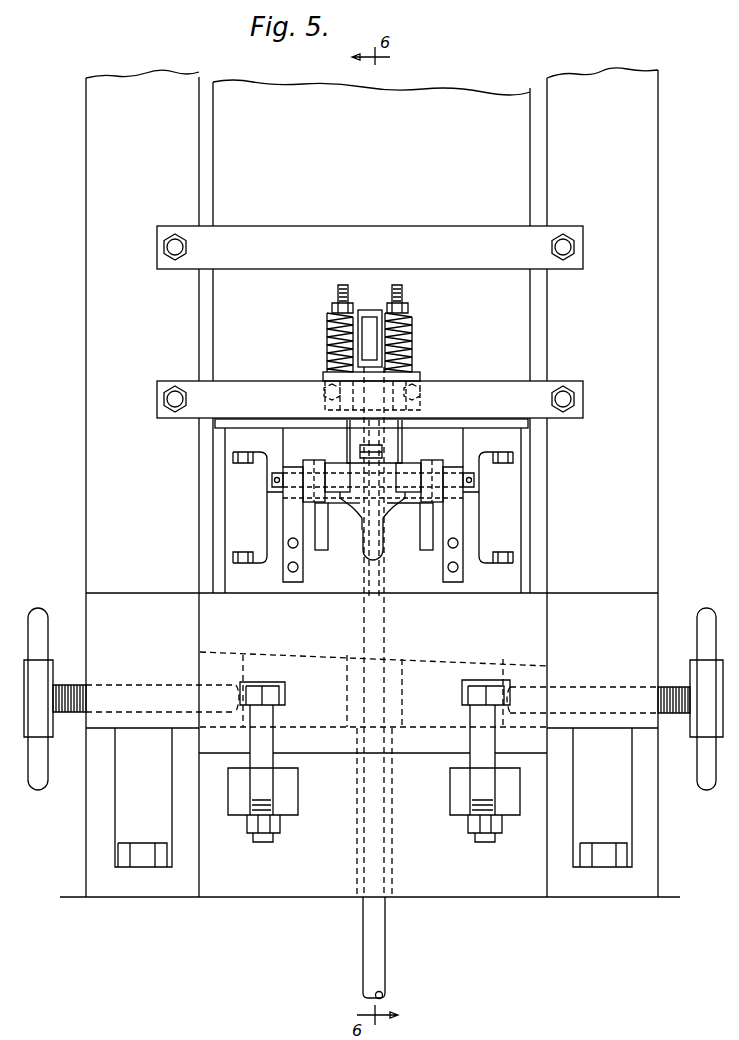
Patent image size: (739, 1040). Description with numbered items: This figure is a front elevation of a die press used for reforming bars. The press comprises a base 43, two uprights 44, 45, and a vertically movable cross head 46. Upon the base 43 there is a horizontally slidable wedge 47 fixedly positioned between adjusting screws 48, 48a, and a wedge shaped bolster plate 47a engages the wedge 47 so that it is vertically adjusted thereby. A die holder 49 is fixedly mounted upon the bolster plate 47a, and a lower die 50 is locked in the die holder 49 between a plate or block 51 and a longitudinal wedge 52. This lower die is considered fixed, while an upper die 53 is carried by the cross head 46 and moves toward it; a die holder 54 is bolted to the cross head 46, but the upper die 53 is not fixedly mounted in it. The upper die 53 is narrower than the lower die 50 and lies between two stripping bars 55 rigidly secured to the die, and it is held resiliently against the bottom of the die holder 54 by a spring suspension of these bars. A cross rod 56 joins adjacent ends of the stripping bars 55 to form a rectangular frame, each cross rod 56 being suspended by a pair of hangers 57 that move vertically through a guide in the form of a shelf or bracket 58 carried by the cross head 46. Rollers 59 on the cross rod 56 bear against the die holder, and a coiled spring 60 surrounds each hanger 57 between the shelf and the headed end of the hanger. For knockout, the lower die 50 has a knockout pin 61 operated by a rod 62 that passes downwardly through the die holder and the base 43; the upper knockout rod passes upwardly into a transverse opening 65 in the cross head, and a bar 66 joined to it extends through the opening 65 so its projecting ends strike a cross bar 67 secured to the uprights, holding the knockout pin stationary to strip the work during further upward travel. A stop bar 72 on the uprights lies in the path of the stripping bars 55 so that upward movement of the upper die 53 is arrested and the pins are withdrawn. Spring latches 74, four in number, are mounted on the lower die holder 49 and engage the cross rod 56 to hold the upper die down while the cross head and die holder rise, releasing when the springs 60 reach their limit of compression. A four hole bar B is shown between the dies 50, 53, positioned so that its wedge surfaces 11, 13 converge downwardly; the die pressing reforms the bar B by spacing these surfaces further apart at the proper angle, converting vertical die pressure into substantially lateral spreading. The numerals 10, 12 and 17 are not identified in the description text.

The jaw plate 10 is at (355, 510).
The wedge surface 11 is at (352, 507).
The jaw 12 is at (385, 525).
The wedge surface 13 is at (397, 505).
The jaw 17 is at (398, 500).
The four hole bar B is at (377, 512).
The base 43 is at (503, 892).
The upright 44 is at (656, 410).
The upright 45 is at (100, 483).
The cross head 46 is at (523, 308).
The wedge 47 is at (320, 680).
The bolster plate 47a is at (372, 668).
The adjusting screw 48 is at (73, 715).
The adjusting screw 48a is at (672, 690).
The die holder 49 is at (487, 563).
The lower die 50 is at (413, 530).
The plate or block 51 is at (318, 520).
The longitudinal wedge 52 is at (460, 520).
The upper die 53 is at (387, 480).
The die holder 54 is at (470, 428).
The stripping bar 55 is at (413, 482).
The cross rod 56 is at (470, 480).
The hanger 57 is at (408, 426).
The shelf or bracket 58 is at (420, 372).
The roller 59 is at (433, 478).
The coiled spring 60 is at (408, 332).
The knockout pin 61 is at (380, 585).
The rod 62 is at (375, 935).
The transverse opening 65 is at (359, 310).
The bar 66 is at (373, 325).
The cross bar 67 is at (297, 226).
The stop bar 72 is at (240, 383).
The spring latch 74 is at (290, 512).